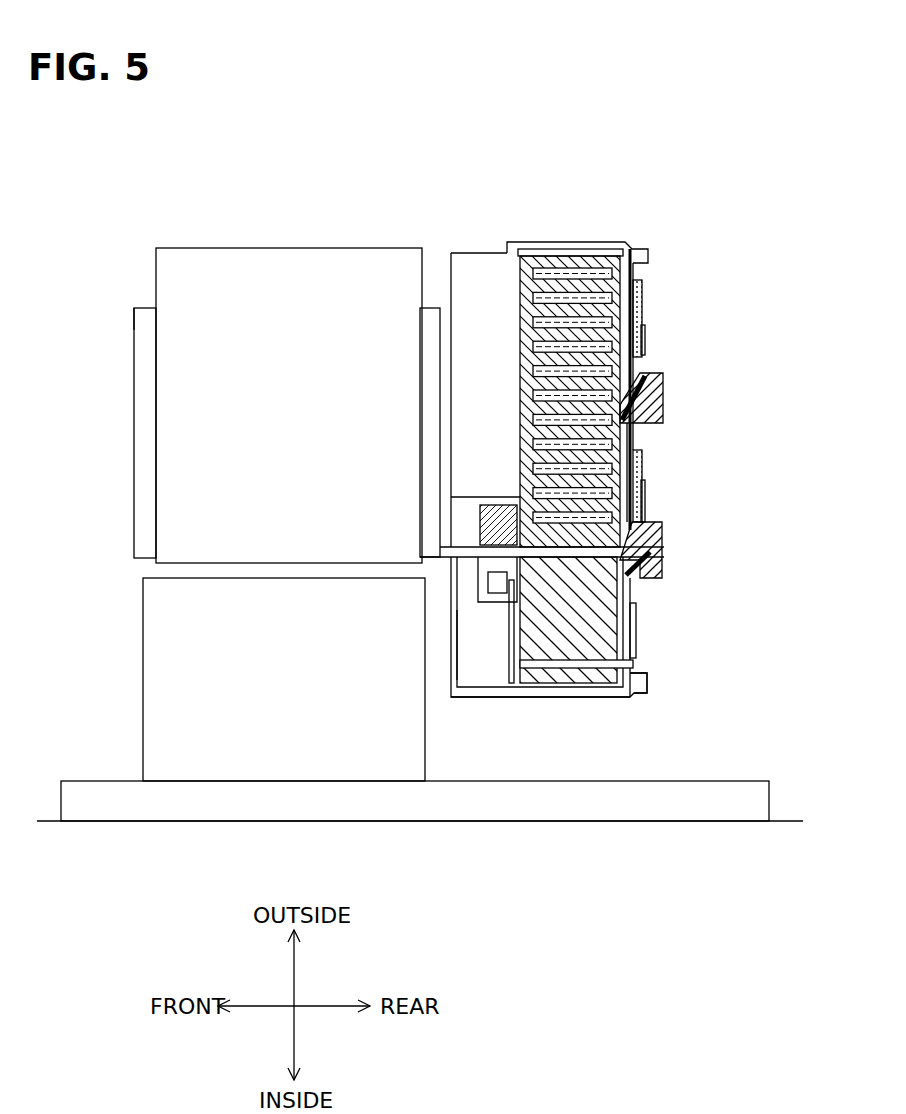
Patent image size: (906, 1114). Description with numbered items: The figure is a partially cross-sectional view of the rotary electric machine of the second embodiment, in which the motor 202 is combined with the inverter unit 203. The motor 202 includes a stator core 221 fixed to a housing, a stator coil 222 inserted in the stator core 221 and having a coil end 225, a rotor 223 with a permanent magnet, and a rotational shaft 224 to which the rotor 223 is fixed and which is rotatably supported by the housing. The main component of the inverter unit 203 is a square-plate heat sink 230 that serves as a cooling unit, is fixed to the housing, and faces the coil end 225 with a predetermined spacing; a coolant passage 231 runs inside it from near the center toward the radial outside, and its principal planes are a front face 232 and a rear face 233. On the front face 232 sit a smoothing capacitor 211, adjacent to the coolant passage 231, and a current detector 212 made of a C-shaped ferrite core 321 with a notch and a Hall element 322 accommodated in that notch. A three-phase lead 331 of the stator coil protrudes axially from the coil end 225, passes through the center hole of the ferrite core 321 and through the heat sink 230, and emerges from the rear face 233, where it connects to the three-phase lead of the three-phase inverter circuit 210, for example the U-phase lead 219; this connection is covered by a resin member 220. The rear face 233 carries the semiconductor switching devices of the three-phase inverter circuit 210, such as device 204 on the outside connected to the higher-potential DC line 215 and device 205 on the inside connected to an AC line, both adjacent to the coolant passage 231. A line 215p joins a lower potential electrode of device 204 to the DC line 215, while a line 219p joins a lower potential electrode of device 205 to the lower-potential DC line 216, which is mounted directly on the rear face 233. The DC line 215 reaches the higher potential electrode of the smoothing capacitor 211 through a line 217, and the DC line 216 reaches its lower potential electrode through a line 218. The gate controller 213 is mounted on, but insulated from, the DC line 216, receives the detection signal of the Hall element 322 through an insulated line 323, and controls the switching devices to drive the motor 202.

The motor 202 is at (289, 358).
The inverter unit 203 is at (652, 236).
The semiconductor switching device 204 is at (645, 287).
The semiconductor switching device 205 is at (648, 455).
The three-phase inverter circuit 210 is at (662, 350).
The smoothing capacitor 211 is at (487, 255).
The current detector 212 is at (494, 610).
The gate controller 213 is at (637, 618).
The DC line 215 is at (650, 251).
The line 215p is at (668, 372).
The DC line 216 is at (649, 676).
The line 217 is at (568, 250).
The line 218 is at (466, 700).
The U-phase lead 219 is at (645, 471).
The line 219p is at (655, 520).
The resin member 220 is at (658, 386).
The stator core 221 is at (290, 252).
The stator coil 222 is at (147, 298).
The rotor 223 is at (148, 676).
The rotational shaft 224 is at (718, 792).
The coil end 225 is at (132, 456).
The heat sink 230 is at (594, 656).
The coolant passage 231 is at (540, 401).
The front face 232 is at (525, 362).
The rear face 233 is at (628, 402).
The ferrite core 321 is at (490, 504).
The Hall element 322 is at (488, 583).
The line 323 is at (510, 655).
The three-phase lead 331 is at (561, 600).